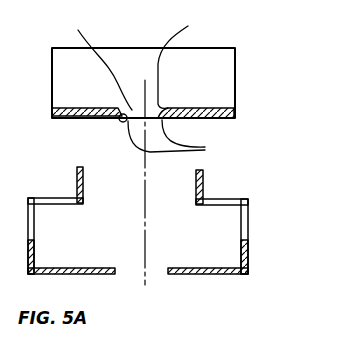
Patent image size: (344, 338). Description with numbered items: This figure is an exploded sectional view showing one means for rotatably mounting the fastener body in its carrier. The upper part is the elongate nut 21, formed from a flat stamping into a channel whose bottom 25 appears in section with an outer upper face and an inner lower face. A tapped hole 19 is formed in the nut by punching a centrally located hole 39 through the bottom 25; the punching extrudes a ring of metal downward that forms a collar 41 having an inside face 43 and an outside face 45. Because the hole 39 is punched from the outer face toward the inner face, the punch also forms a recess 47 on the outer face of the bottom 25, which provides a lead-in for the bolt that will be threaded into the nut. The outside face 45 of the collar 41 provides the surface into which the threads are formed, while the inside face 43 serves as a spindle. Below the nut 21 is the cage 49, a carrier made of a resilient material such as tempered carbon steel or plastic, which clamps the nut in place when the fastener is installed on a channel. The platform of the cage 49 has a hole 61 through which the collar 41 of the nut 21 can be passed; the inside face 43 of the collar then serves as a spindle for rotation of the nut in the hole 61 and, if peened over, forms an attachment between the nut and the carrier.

The tapped hole 19 is at (176, 100).
The nut 21 is at (249, 43).
The bottom 25 is at (214, 108).
The hole 39 is at (134, 107).
The collar 41 is at (181, 140).
The inside face 43 is at (118, 121).
The outside face 45 is at (186, 58).
The recess 47 is at (95, 60).
The cage 49 is at (258, 229).
The hole 61 is at (167, 272).